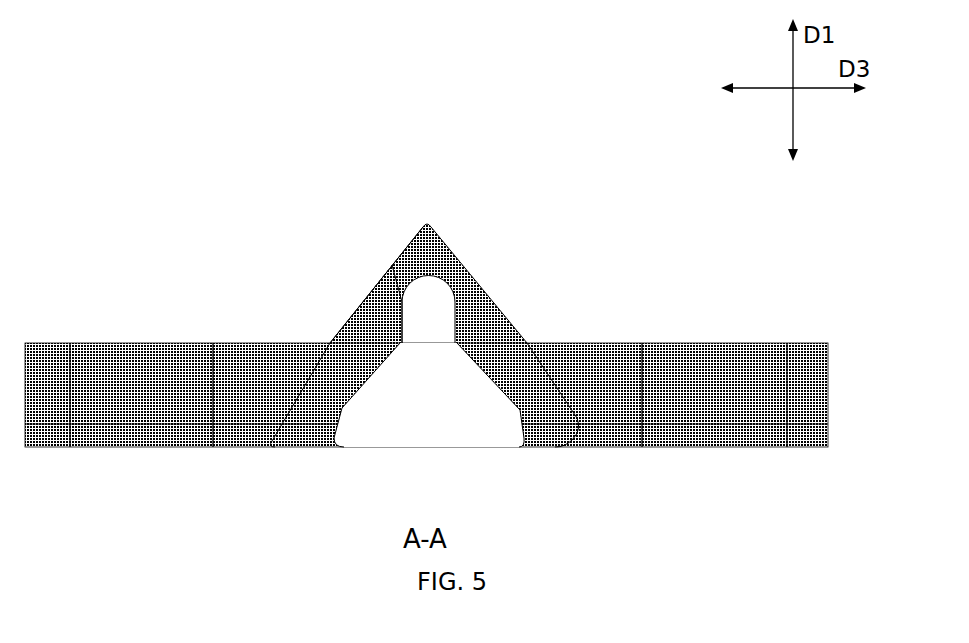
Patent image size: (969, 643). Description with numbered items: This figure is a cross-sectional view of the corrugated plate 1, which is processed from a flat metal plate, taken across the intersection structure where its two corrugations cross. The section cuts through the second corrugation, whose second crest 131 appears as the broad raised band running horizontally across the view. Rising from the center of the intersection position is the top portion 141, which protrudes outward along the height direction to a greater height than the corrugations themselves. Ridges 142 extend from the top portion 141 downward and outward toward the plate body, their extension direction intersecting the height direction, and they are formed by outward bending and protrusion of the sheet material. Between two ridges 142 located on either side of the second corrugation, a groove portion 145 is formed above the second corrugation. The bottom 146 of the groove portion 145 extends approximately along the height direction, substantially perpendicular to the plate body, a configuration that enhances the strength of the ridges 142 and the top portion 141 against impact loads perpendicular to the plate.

The corrugated plate 1 is at (130, 141).
The second crest 131 is at (160, 343).
The top portion 141 is at (424, 221).
The ridge 142 is at (350, 312).
The groove portion 145 is at (372, 292).
The bottom 146 is at (404, 307).